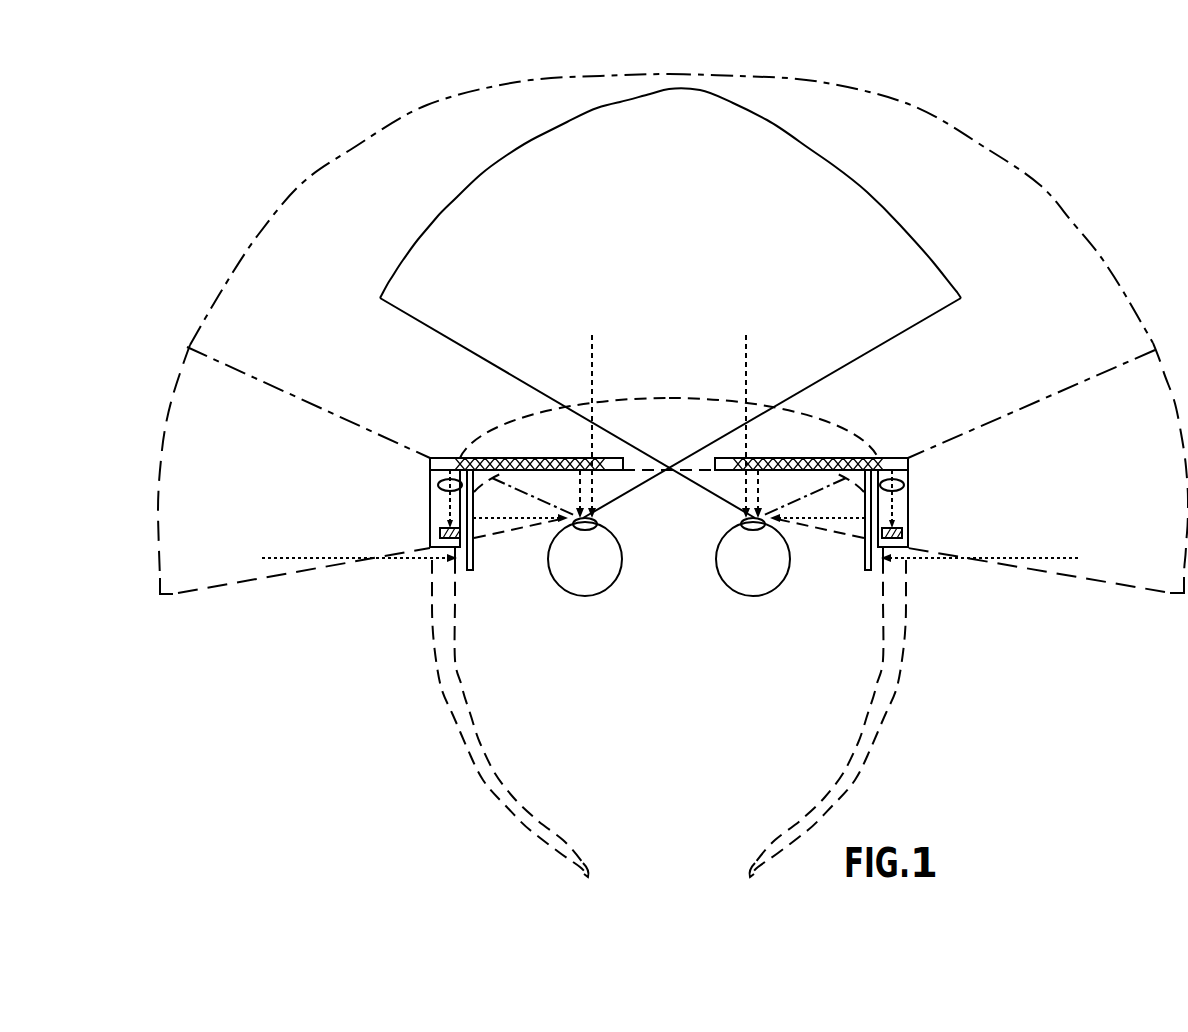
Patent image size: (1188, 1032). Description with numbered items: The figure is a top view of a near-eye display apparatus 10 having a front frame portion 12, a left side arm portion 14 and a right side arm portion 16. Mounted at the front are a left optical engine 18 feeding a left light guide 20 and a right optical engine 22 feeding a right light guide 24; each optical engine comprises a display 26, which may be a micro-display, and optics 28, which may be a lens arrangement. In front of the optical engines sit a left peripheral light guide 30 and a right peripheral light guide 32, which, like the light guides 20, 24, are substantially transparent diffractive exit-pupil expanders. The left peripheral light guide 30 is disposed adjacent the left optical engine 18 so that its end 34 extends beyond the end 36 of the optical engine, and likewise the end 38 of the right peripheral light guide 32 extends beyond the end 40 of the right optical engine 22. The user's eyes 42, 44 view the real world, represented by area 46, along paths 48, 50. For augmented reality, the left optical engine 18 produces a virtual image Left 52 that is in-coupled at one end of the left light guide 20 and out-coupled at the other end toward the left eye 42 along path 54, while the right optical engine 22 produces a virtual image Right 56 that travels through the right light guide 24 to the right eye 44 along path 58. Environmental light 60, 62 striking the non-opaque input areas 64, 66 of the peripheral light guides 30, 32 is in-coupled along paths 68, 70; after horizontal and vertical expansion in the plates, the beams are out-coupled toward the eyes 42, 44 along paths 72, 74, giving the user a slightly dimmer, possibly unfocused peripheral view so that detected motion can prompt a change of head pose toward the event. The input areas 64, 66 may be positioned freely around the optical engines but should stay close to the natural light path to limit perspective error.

The apparatus 10 is at (226, 832).
The front frame portion 12 is at (667, 478).
The left side arm portion 14 is at (462, 689).
The right side arm portion 16 is at (876, 689).
The left optical engine 18 is at (430, 522).
The left light guide 20 is at (430, 462).
The right optical engine 22 is at (908, 522).
The right light guide 24 is at (908, 462).
The display 26 is at (440, 534).
The optics 28 is at (438, 485).
The left peripheral light guide 30 is at (474, 546).
The right peripheral light guide 32 is at (866, 546).
The end of left peripheral light guide 34 is at (474, 568).
The end of left optical engine 36 is at (442, 548).
The end of right peripheral light guide 38 is at (870, 570).
The end of right optical engine 40 is at (897, 548).
The left eye 42 is at (602, 596).
The right eye 44 is at (755, 596).
The real world area 46 is at (722, 112).
The real world left path 48 is at (594, 385).
The real world right path 50 is at (749, 385).
The virtual image Left 52 is at (222, 290).
The left virtual image path 54 is at (455, 460).
The virtual image Right 56 is at (1080, 244).
The right virtual image path 58 is at (887, 460).
The environmental light 60 is at (226, 580).
The environmental light 62 is at (1160, 592).
The input area 64 is at (463, 570).
The input area 66 is at (878, 568).
The left in-coupling path 68 is at (318, 560).
The right in-coupling path 70 is at (1018, 560).
The left out-coupling path 72 is at (527, 518).
The right out-coupling path 74 is at (812, 518).